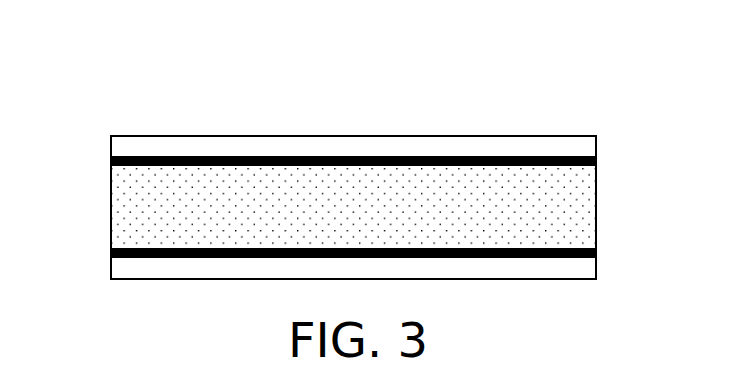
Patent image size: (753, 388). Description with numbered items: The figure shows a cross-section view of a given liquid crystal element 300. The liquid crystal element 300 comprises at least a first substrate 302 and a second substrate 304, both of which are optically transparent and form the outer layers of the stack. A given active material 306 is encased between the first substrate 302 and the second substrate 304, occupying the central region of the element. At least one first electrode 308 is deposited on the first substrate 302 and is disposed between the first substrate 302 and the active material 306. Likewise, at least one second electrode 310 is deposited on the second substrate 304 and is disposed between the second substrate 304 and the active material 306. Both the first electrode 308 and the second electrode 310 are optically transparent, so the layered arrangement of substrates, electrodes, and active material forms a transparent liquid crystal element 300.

The liquid crystal element 300 is at (627, 57).
The first substrate 302 is at (596, 145).
The second substrate 304 is at (596, 265).
The active material 306 is at (596, 202).
The first electrode 308 is at (111, 162).
The second electrode 310 is at (111, 252).